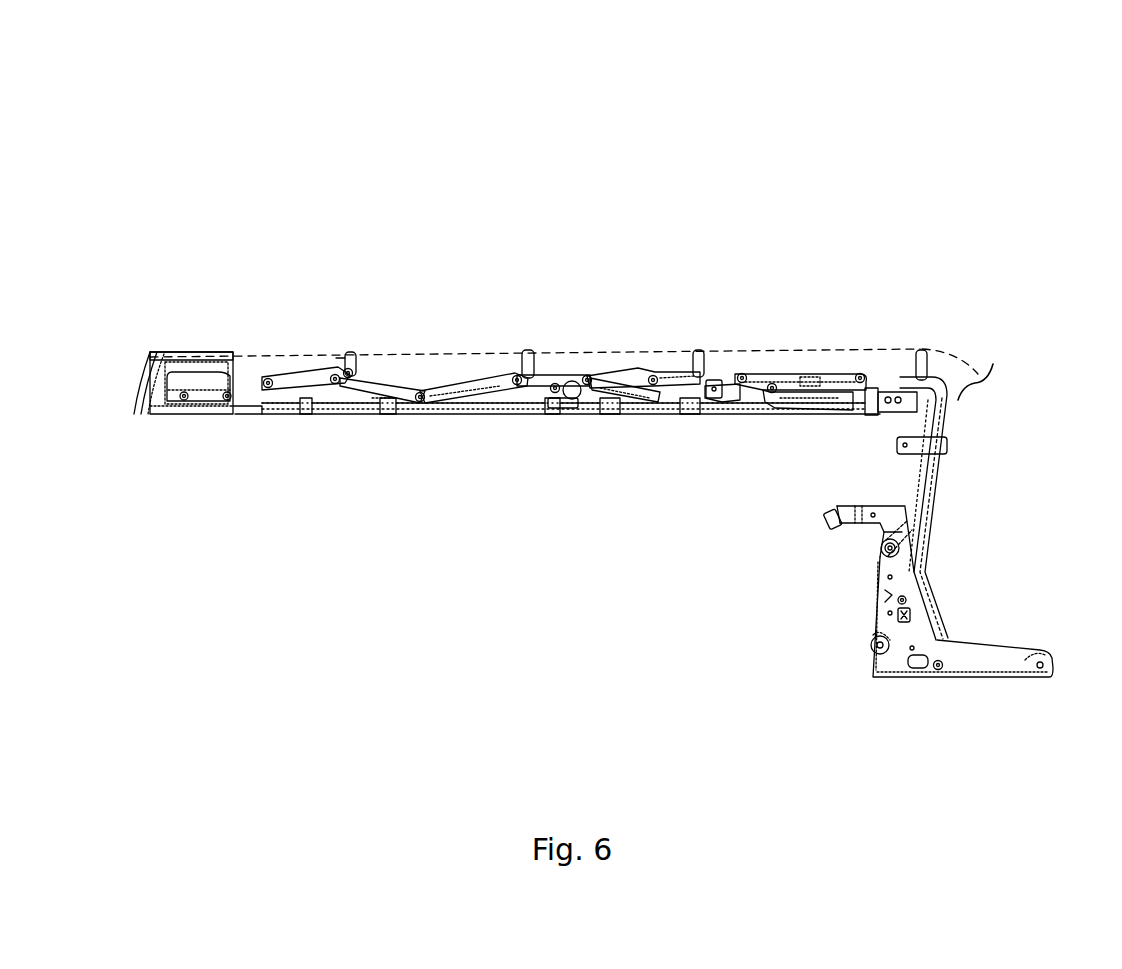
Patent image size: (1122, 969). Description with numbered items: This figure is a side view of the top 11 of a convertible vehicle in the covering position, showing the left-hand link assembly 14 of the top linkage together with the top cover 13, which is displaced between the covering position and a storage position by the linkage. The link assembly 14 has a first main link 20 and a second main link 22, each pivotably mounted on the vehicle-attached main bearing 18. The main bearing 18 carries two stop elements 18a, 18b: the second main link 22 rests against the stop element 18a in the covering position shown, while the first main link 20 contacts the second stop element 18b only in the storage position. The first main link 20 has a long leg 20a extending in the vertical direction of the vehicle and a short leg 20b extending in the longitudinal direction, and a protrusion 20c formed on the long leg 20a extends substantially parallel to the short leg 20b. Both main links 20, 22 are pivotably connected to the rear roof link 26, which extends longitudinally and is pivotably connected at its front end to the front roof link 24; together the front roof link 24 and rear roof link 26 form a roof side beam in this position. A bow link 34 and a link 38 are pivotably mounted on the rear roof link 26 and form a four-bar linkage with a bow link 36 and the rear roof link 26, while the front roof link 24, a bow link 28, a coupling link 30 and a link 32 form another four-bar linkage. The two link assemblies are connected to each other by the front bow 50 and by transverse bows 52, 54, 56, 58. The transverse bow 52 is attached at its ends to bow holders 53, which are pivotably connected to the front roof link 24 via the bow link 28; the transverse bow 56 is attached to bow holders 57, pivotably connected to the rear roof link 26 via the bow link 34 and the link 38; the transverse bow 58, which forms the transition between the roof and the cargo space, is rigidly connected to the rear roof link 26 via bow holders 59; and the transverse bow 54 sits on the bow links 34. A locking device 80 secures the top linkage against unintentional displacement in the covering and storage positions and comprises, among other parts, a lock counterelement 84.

The top 11 is at (601, 135).
The top cover 13 is at (228, 358).
The link assembly 14 is at (308, 415).
The vehicle-attached main bearing 18 is at (962, 660).
The stop element 18a is at (907, 615).
The second stop element 18b is at (915, 663).
The first main link 20 is at (878, 523).
The long leg 20a is at (908, 490).
The short leg 20b is at (822, 378).
The protrusion 20c is at (852, 523).
The second main link 22 is at (935, 470).
The front roof link 24 is at (432, 408).
The rear roof link 26 is at (772, 405).
The bow link 28 is at (290, 358).
The coupling link 30 is at (390, 390).
The link 32 is at (493, 385).
The bow link 34 is at (626, 395).
The bow link 36 is at (640, 375).
The link 38 is at (722, 385).
The front bow 50 is at (190, 372).
The transverse bow 52 is at (360, 360).
The bow holder 53 is at (340, 360).
The transverse bow 54 is at (537, 358).
The transverse bow 56 is at (705, 383).
The bow holder 57 is at (688, 357).
The transverse bow 58 is at (922, 368).
The bow holder 59 is at (903, 393).
The locking device 80 is at (569, 400).
The lock counterelement 84 is at (840, 515).